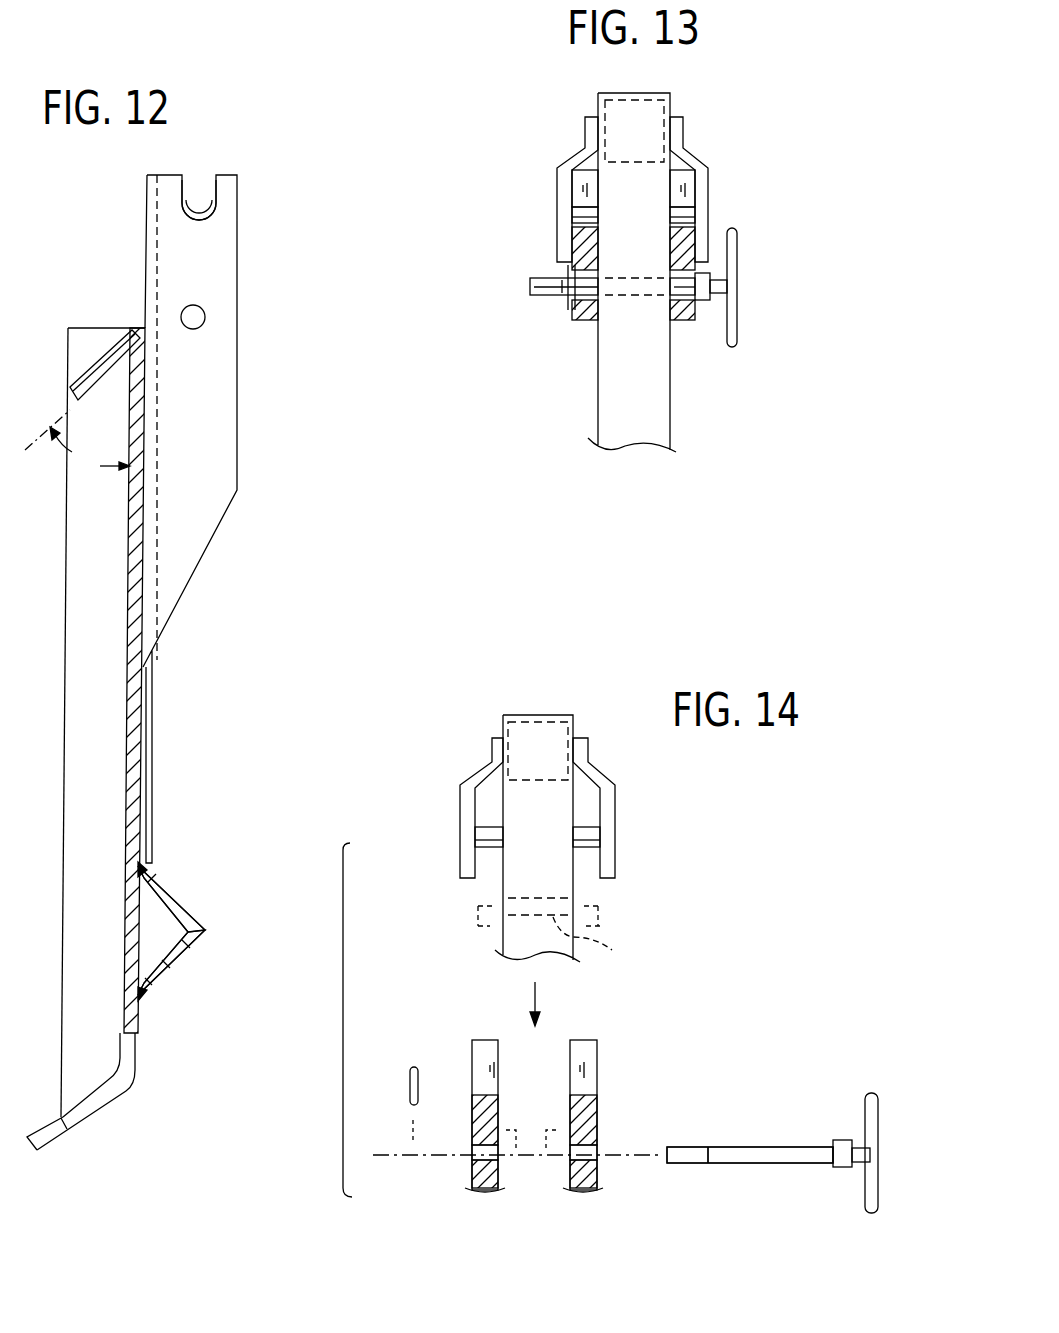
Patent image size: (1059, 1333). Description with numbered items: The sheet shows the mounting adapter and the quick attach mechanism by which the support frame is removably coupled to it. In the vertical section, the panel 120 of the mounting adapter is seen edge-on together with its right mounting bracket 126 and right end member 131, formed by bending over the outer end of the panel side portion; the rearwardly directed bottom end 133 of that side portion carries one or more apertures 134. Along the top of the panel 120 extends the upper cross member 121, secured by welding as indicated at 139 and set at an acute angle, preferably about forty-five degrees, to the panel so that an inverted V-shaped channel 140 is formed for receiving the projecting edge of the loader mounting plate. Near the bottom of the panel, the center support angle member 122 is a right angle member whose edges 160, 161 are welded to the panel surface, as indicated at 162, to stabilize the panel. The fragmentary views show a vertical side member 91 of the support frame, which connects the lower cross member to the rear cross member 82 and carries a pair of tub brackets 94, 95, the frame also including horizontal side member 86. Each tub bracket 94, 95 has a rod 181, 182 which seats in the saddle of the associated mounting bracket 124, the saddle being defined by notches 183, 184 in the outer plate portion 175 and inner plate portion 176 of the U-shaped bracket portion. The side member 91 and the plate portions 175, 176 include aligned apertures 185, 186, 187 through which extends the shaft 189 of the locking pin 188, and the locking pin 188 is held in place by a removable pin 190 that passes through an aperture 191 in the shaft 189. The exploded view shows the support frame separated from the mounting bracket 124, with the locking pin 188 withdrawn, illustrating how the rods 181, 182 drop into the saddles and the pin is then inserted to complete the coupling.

In FIG. 14, the rear cross member 82 is at (548, 720).
In FIG. 13, the horizontal side member 86 is at (652, 95).
In FIG. 13, the vertical side member 91 is at (604, 409).
In FIG. 14, the vertical side member 91 is at (518, 937).
In FIG. 13, the tub bracket 94 is at (704, 172).
In FIG. 14, the tub bracket 94 is at (612, 805).
In FIG. 13, the tub bracket 95 is at (557, 187).
In FIG. 14, the tub bracket 95 is at (462, 805).
In FIG. 12, the panel 120 is at (127, 704).
In FIG. 12, the upper cross member 121 is at (101, 356).
In FIG. 12, the center support angle member 122 is at (198, 938).
In FIG. 13, the left mounting bracket 124 is at (552, 307).
In FIG. 14, the left mounting bracket 124 is at (668, 1062).
In FIG. 12, the right mounting bracket 126 is at (205, 257).
In FIG. 12, the right end member 131 is at (76, 513).
In FIG. 12, the bottom end 133 is at (41, 1122).
In FIG. 12, the aperture 134 is at (95, 1086).
In FIG. 12, the weld 139 is at (131, 328).
In FIG. 12, the channel 140 is at (123, 379).
In FIG. 12, the edge of center support angle member 160 is at (150, 884).
In FIG. 12, the edge of center support angle member 161 is at (170, 975).
In FIG. 12, the weld 162 is at (141, 869).
In FIG. 13, the outer plate portion 175 is at (688, 316).
In FIG. 14, the outer plate portion 175 is at (597, 1119).
In FIG. 12, the inner plate portion 176 is at (226, 190).
In FIG. 13, the inner plate portion 176 is at (574, 316).
In FIG. 14, the inner plate portion 176 is at (472, 1120).
In FIG. 13, the rod 181 is at (690, 215).
In FIG. 14, the rod 181 is at (590, 850).
In FIG. 13, the rod 182 is at (578, 215).
In FIG. 14, the rod 182 is at (483, 850).
In FIG. 14, the notch 183 is at (588, 1062).
In FIG. 12, the notch 184 is at (196, 203).
In FIG. 14, the notch 184 is at (485, 1048).
In FIG. 14, the aperture 185 is at (596, 1162).
In FIG. 14, the aperture 186 is at (562, 945).
In FIG. 12, the aperture 187 is at (205, 317).
In FIG. 14, the aperture 187 is at (472, 1153).
In FIG. 13, the locking pin 188 is at (738, 287).
In FIG. 14, the locking pin 188 is at (768, 1166).
In FIG. 14, the shaft 189 is at (752, 1147).
In FIG. 13, the removable pin 190 is at (566, 272).
In FIG. 14, the removable pin 190 is at (422, 1050).
In FIG. 14, the aperture 191 is at (708, 1165).